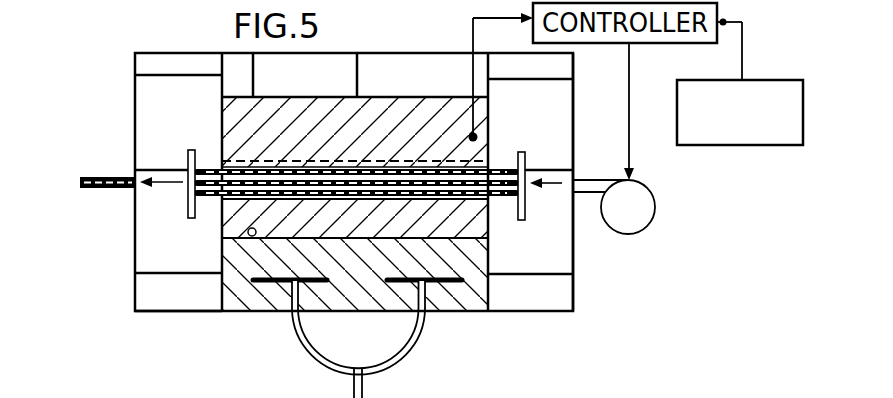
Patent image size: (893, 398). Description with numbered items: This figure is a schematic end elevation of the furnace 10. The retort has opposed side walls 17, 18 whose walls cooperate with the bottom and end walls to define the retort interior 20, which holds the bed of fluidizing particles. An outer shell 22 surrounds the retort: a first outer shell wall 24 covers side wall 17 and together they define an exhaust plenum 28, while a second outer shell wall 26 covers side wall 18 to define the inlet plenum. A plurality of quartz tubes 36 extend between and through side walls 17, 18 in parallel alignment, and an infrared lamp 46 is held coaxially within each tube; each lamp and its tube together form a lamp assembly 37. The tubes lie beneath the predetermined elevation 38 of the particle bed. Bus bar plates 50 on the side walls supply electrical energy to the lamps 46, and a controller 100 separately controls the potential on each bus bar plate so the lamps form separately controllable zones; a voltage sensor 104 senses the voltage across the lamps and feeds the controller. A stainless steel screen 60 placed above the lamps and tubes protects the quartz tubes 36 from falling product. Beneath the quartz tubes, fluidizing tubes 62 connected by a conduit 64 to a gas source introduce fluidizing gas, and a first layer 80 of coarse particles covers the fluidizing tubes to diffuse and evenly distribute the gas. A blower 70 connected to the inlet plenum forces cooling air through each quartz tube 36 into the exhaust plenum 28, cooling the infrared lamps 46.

The furnace 10 is at (100, 239).
The side wall 17 is at (218, 89).
The side wall 18 is at (497, 100).
The retort interior 20 is at (322, 86).
The outer shell 22 is at (126, 284).
The first outer shell wall 24 is at (135, 89).
The second outer shell wall 26 is at (575, 113).
The exhaust plenum 28 is at (191, 256).
The quartz tubes 36 is at (360, 165).
The lamp assembly 37 is at (240, 218).
The predetermined elevation 38 is at (403, 97).
The infrared lamp 46 is at (512, 242).
The bus bar plates 50 is at (188, 158).
The stainless steel screen 60 is at (414, 161).
The fluidizing tubes 62 is at (284, 316).
The conduit 64 is at (368, 392).
The blower 70 is at (651, 214).
The first layer of coarse particles 80 is at (251, 237).
The controller 100 is at (471, 134).
The voltage sensor 104 is at (761, 145).